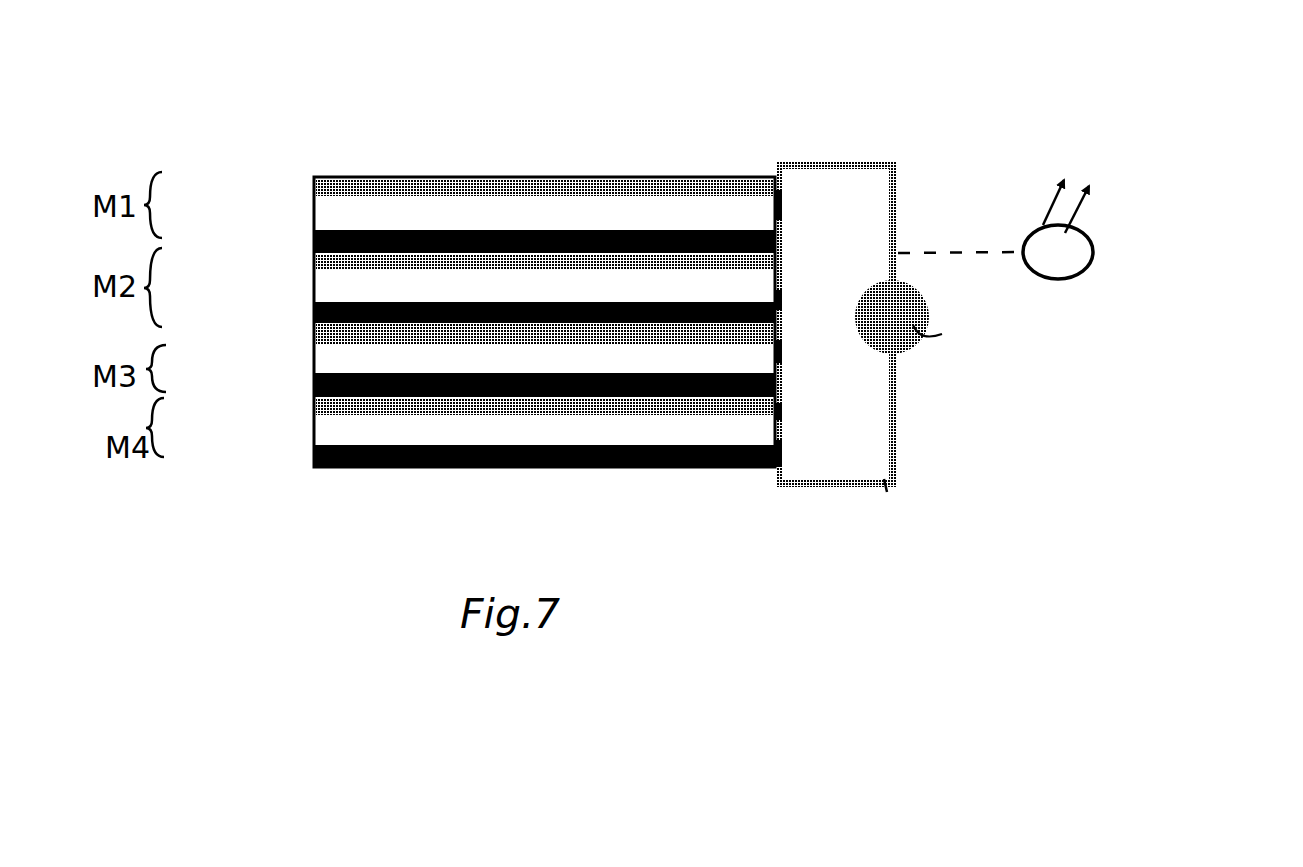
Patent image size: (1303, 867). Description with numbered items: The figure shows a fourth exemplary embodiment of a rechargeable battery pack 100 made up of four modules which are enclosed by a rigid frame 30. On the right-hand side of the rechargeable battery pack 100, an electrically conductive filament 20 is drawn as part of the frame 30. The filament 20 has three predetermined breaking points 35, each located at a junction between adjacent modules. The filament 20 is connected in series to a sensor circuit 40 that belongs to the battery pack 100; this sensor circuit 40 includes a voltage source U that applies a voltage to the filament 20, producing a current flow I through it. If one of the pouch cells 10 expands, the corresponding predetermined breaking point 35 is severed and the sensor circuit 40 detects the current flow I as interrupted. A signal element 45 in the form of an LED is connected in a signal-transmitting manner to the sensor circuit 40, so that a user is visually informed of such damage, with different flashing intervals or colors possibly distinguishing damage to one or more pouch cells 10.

The pouch cell 10 is at (325, 209).
The electrically conductive filament 20 is at (770, 213).
The rigid frame 30 is at (521, 172).
The predetermined breaking point 35 is at (313, 251).
The sensor circuit 40 is at (936, 452).
The signal element 45 is at (1095, 248).
The rechargeable battery pack 100 is at (860, 84).